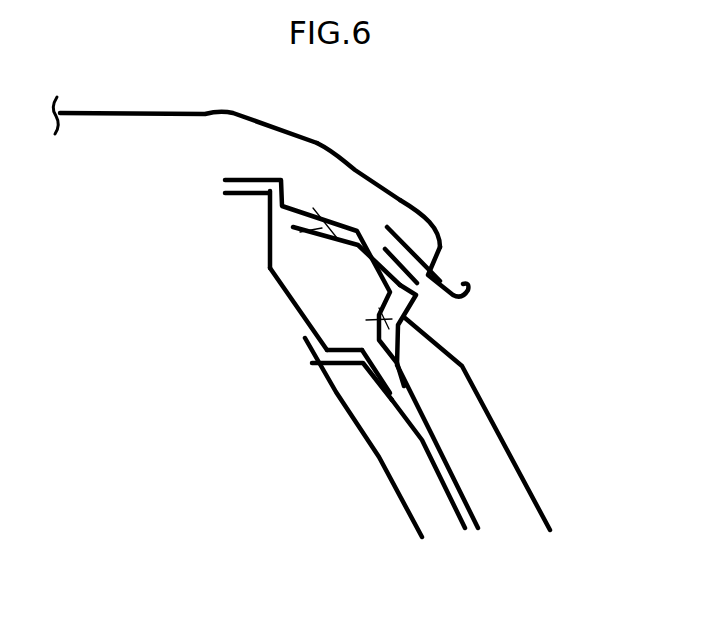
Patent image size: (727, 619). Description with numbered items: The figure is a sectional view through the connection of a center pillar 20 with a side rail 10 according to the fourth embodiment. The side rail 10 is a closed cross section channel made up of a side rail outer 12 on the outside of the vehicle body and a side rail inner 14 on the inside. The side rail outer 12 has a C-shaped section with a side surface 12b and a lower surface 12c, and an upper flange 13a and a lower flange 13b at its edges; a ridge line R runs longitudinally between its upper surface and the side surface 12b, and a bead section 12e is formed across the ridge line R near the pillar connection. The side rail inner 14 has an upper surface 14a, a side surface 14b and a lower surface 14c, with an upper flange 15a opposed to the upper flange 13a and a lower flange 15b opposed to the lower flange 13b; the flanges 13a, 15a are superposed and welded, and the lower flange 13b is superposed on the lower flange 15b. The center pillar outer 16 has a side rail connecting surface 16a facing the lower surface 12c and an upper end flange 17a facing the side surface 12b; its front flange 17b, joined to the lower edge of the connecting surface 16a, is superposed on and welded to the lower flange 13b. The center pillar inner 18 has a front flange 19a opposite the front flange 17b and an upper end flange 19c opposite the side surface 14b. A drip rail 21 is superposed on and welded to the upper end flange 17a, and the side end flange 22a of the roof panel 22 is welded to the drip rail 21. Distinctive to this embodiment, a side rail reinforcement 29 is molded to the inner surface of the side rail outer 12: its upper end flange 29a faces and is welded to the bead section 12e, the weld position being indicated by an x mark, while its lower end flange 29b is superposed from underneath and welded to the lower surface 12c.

The side rail 10 is at (208, 290).
The side rail outer 12 is at (361, 226).
The side surface 12b is at (441, 243).
The lower surface 12c is at (400, 313).
The bead section 12e is at (293, 203).
The upper flange 13a is at (225, 180).
The lower flange 13b is at (408, 371).
The side rail inner 14 is at (276, 282).
The upper surface 14a is at (268, 245).
The side surface 14b is at (308, 333).
The lower surface 14c is at (347, 370).
The upper flange 15a is at (232, 197).
The lower flange 15b is at (382, 386).
The center pillar outer 16 is at (510, 442).
The side rail connecting surface 16a is at (410, 317).
The upper end flange 17a is at (400, 256).
The front flange 17b is at (447, 532).
The center pillar inner 18 is at (378, 463).
The front flange 19a is at (457, 512).
The upper end flange 19c is at (305, 352).
The center pillar 20 is at (393, 496).
The drip rail 21 is at (372, 243).
The roof panel 22 is at (107, 113).
The side end flange 22a is at (438, 268).
The side rail reinforcement 29 is at (400, 230).
The upper end flange 29a is at (312, 233).
The lower end flange 29b is at (383, 318).
The ridge line R is at (352, 215).